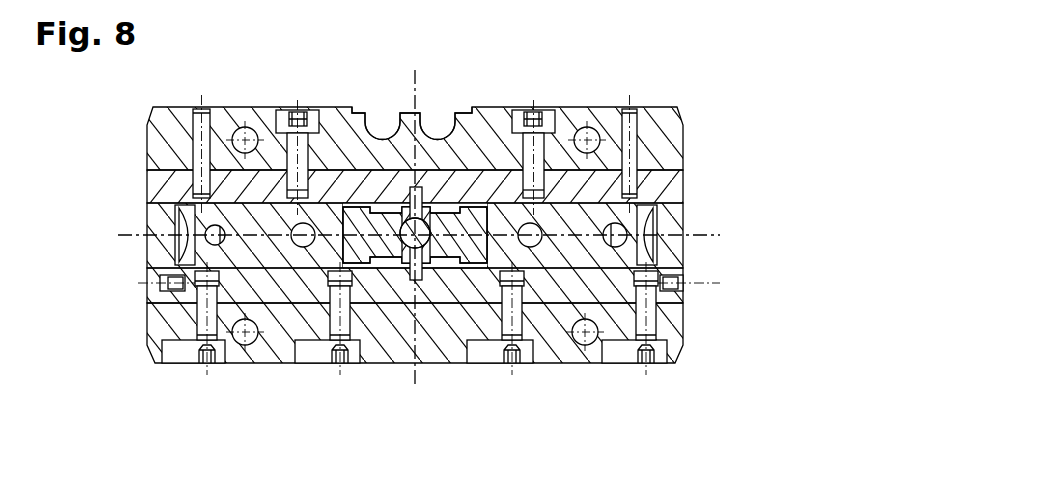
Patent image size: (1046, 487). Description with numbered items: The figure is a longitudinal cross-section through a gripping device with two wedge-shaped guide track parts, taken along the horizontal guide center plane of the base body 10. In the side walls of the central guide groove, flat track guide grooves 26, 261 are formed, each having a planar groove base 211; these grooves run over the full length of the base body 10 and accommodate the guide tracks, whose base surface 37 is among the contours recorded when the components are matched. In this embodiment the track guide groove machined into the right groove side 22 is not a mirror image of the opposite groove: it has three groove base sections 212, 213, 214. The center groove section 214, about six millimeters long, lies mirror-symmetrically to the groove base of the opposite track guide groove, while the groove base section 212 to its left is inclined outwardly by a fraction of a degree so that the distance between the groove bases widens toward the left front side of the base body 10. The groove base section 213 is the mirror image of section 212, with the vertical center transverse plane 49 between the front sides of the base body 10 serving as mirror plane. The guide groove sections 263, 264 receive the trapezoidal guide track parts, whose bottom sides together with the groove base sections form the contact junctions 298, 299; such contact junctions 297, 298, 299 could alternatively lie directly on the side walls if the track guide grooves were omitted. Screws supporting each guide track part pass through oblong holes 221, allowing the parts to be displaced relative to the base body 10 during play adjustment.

The base body 10 is at (663, 128).
The right groove side 22 is at (692, 298).
The track guide groove 26 is at (345, 190).
The base surface 37 is at (477, 152).
The vertical center transverse plane 49 is at (416, 87).
The groove base 211 is at (232, 208).
The groove base section 212 is at (305, 292).
The groove base section 213 is at (578, 345).
The center groove section 214 is at (434, 283).
The oblong hole 221 is at (172, 355).
The track guide groove 261 is at (420, 362).
The guide groove section 263 is at (246, 302).
The guide groove section 264 is at (644, 366).
The contact junction 297 is at (557, 172).
The contact junction 298 is at (360, 300).
The contact junction 299 is at (538, 292).